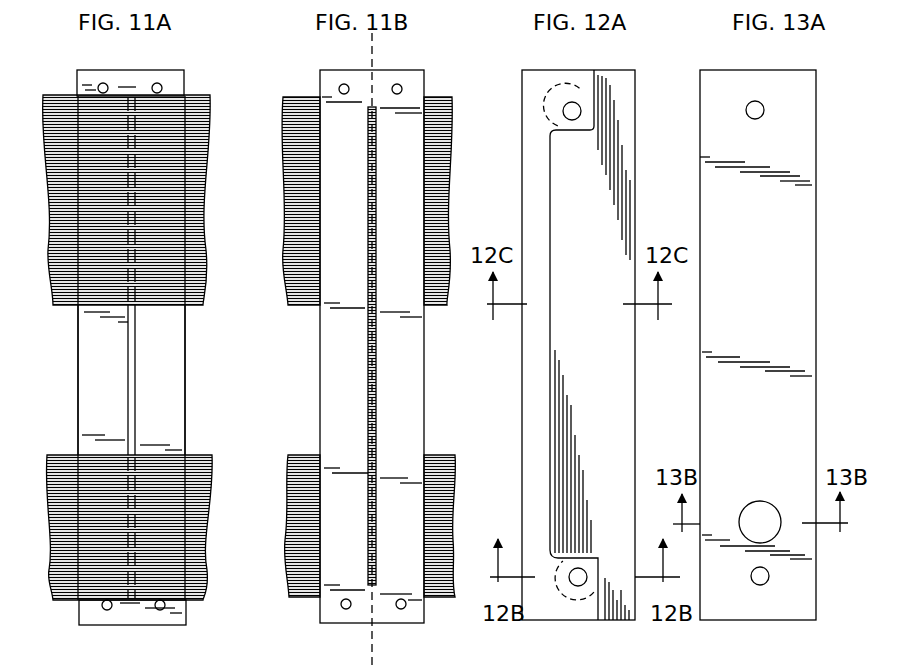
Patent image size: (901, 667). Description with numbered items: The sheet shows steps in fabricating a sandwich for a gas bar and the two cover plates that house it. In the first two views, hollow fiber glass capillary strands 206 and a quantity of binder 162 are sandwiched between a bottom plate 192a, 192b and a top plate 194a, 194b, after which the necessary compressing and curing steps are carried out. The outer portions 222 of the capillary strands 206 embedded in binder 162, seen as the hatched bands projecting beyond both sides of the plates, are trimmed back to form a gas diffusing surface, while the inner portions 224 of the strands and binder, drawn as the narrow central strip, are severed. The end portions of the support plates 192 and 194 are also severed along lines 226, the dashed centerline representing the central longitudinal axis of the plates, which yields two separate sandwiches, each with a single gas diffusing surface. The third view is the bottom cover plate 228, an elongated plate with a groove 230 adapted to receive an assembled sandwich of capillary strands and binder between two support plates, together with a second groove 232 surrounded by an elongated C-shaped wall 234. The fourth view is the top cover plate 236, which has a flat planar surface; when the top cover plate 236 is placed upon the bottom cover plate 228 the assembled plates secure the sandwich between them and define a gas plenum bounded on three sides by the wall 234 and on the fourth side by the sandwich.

In FIG. 11A, the support plate 192 is at (190, 78).
In FIG. 11A, the bottom plate portion 192a is at (88, 344).
In FIG. 11A, the bottom plate portion 192b is at (145, 370).
In FIG. 11A, the hollow fiber glass capillary strands 206 is at (160, 295).
In FIG. 11B, the hollow fiber glass capillary strands 206 is at (302, 305).
In FIG. 11A, the binder 162 is at (158, 463).
In FIG. 11B, the binder 162 is at (300, 463).
In FIG. 11B, the support plate 194 is at (312, 86).
In FIG. 11B, the top plate portion 194a is at (360, 356).
In FIG. 11B, the top plate portion 194b is at (412, 389).
In FIG. 11B, the outer portions 222 is at (290, 166).
In FIG. 11B, the inner portions 224 is at (377, 256).
In FIG. 11B, the lines 226 is at (374, 85).
In FIG. 12A, the bottom cover plate 228 is at (514, 96).
In FIG. 12A, the groove 230 is at (625, 115).
In FIG. 12A, the second groove 232 is at (573, 418).
In FIG. 12A, the C-shaped wall 234 is at (576, 77).
In FIG. 13A, the top cover plate 236 is at (822, 125).